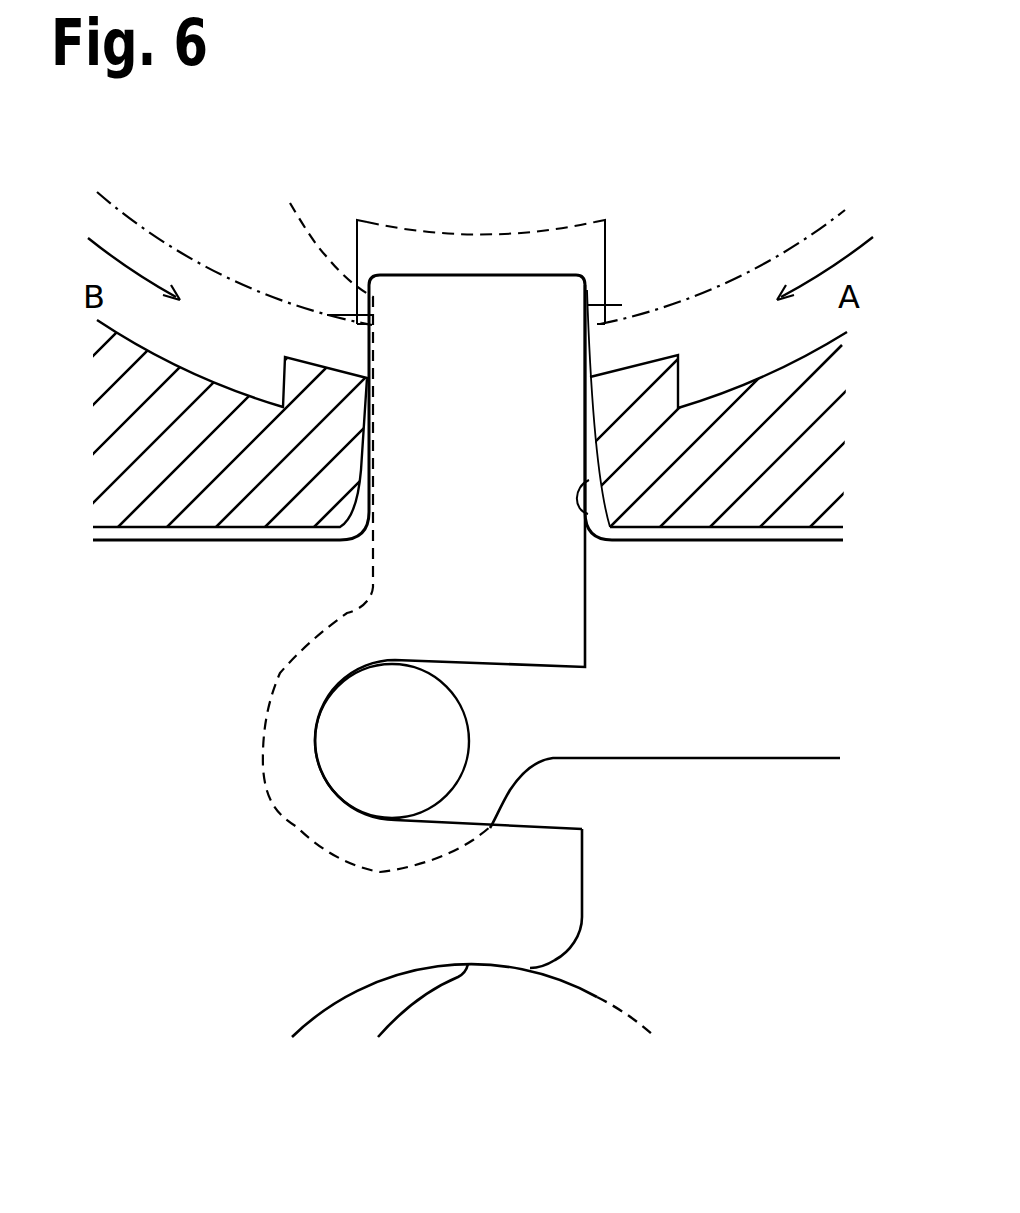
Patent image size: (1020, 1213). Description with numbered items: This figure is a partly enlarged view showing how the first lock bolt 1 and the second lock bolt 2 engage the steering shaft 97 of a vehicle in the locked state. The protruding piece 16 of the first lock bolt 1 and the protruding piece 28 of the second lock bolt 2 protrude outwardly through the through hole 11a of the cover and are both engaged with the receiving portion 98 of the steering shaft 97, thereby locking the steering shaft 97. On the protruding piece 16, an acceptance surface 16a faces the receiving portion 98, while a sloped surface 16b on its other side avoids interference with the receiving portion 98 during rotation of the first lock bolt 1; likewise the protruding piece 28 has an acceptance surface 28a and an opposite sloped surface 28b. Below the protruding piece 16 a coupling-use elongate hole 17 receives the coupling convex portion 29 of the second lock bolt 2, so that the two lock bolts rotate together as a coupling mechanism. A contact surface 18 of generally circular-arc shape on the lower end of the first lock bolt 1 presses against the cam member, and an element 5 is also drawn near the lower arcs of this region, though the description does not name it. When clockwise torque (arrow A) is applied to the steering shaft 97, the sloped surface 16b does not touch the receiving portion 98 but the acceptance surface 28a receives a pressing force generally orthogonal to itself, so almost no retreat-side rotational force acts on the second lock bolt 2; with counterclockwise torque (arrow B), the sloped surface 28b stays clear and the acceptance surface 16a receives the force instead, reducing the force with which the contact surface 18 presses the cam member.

The first lock bolt 1 is at (146, 771).
The second lock bolt 2 is at (738, 696).
The shaft 5 is at (583, 1010).
The through hole 11a is at (587, 511).
The protruding piece 16 is at (430, 482).
The acceptance surface 16a is at (332, 315).
The sloped surface 16b is at (588, 290).
The coupling-use elongate hole 17 is at (537, 829).
The contact surface 18 is at (357, 990).
The protruding piece 28 is at (533, 528).
The acceptance surface 28a is at (590, 305).
The sloped surface 28b is at (294, 186).
The coupling convex portion 29 is at (440, 718).
The steering shaft 97 is at (605, 98).
The receiving portion 98 is at (462, 243).